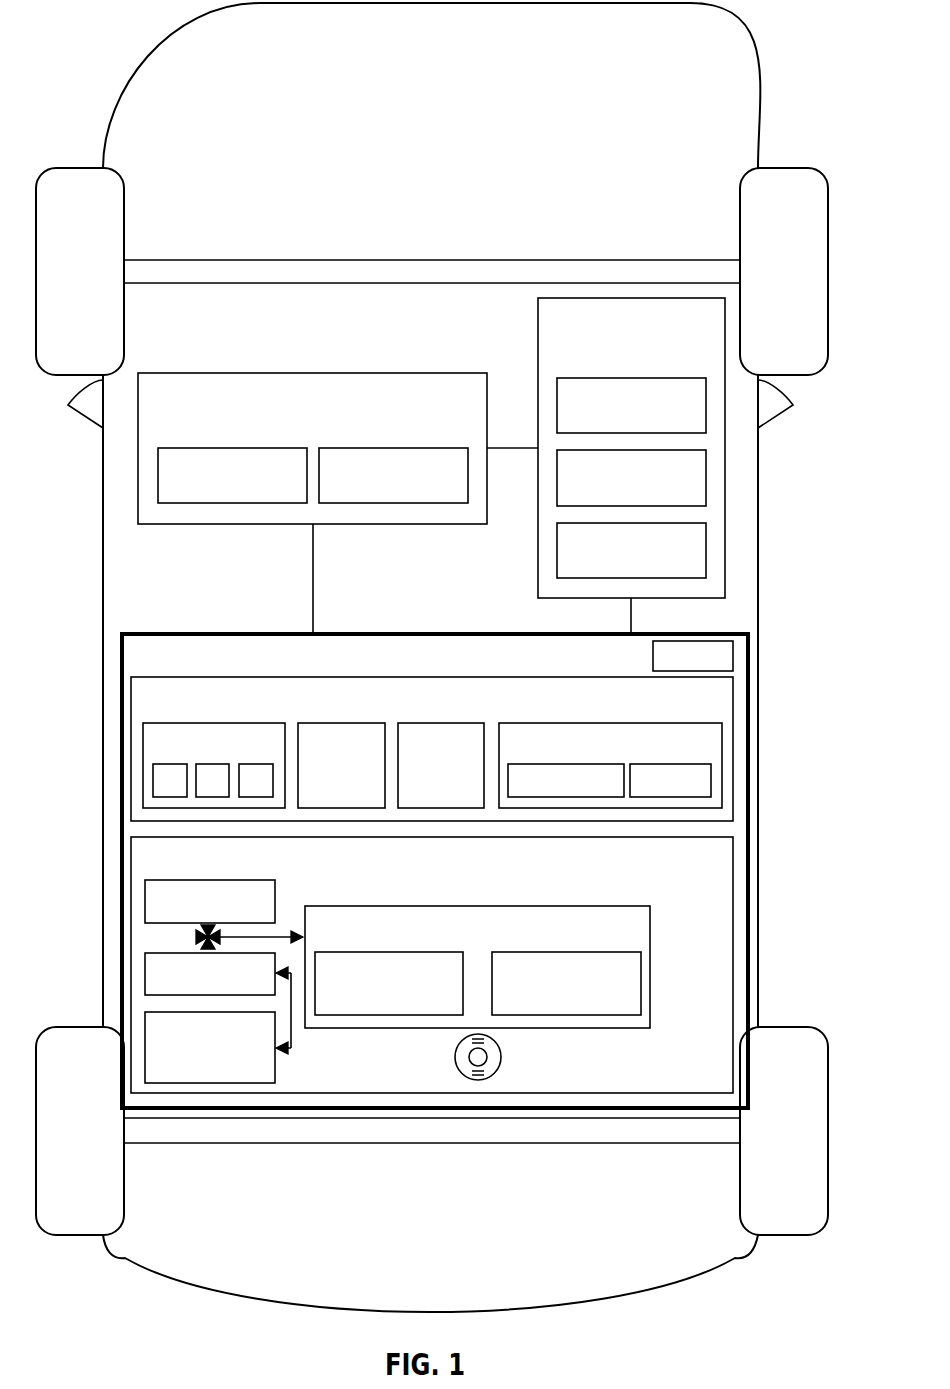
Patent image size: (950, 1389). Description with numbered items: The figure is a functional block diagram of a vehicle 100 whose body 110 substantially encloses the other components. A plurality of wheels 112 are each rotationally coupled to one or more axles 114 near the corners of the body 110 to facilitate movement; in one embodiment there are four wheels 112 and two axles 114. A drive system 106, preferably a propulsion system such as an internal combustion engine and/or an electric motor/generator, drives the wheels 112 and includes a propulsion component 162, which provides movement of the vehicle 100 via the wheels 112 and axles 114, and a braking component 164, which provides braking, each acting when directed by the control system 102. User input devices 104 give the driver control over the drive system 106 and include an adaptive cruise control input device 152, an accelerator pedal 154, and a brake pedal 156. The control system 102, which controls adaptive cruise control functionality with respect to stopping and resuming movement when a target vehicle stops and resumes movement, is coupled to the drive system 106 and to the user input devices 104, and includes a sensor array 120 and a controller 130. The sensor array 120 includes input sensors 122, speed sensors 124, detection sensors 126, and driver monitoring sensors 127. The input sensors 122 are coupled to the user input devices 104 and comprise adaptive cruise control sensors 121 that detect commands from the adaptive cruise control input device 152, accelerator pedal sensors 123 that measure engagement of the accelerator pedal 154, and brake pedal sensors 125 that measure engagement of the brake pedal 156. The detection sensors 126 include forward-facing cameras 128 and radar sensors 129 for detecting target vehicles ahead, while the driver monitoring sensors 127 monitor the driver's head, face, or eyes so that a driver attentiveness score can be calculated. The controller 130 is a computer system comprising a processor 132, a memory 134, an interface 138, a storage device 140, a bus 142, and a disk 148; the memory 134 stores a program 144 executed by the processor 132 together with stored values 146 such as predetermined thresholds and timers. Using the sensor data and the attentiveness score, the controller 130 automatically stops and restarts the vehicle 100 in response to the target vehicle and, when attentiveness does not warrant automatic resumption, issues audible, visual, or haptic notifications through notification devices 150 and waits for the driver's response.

The vehicle 100 is at (749, 34).
The control system 102 is at (190, 634).
The user input devices 104 is at (538, 340).
The drive system 106 is at (208, 373).
The body 110 is at (105, 580).
The wheels 112 is at (80, 168).
The axles 114 is at (400, 270).
The sensor array 120 is at (585, 697).
The adaptive cruise control sensors 121 is at (153, 778).
The input sensors 122 is at (208, 723).
The accelerator pedal sensors 123 is at (213, 797).
The speed sensors 124 is at (346, 723).
The brake pedal sensors 125 is at (270, 764).
The detection sensors 126 is at (655, 723).
The driver monitoring sensors 127 is at (484, 767).
The cameras 128 is at (617, 797).
The radar sensors 129 is at (711, 780).
The controller 130 is at (131, 853).
The processor 132 is at (145, 900).
The memory 134 is at (651, 925).
The interface 138 is at (145, 975).
The storage device 140 is at (275, 1060).
The bus 142 is at (196, 937).
The program 144 is at (390, 1015).
The stored values 146 is at (585, 1015).
The disk 148 is at (497, 1066).
The notification devices 150 is at (733, 650).
The adaptive cruise control input device 152 is at (706, 405).
The accelerator pedal 154 is at (706, 478).
The brake pedal 156 is at (706, 550).
The propulsion component 162 is at (232, 505).
The braking component 164 is at (395, 505).